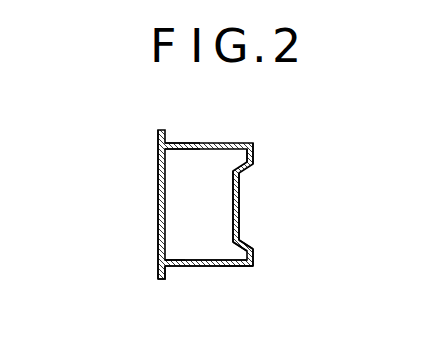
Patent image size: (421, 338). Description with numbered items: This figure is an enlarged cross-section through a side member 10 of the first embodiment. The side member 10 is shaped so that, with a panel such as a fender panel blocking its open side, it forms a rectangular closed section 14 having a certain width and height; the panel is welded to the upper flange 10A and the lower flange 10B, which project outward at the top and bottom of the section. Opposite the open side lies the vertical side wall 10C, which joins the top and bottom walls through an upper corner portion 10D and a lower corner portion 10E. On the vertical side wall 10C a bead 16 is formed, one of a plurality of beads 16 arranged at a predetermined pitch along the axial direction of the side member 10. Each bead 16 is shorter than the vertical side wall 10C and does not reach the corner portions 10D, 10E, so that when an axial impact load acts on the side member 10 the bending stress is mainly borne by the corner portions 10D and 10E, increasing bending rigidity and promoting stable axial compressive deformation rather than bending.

The side member 10 is at (228, 137).
The upper flange 10A is at (175, 143).
The lower flange 10B is at (167, 268).
The vertical side wall 10C is at (253, 253).
The upper corner portion 10D is at (254, 148).
The lower corner portion 10E is at (253, 266).
The rectangular closed section 14 is at (158, 222).
The bead 16 is at (241, 223).